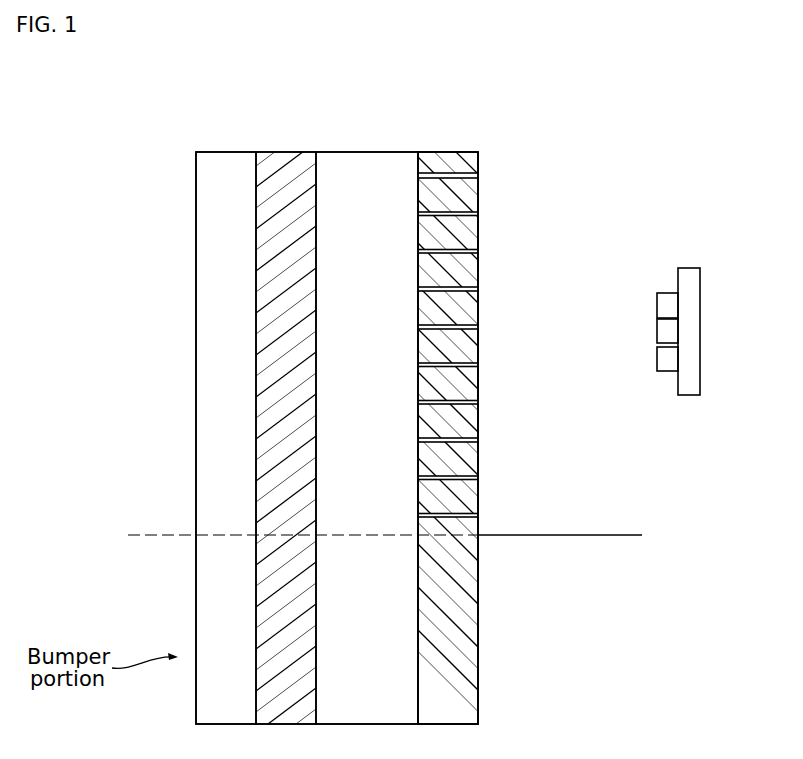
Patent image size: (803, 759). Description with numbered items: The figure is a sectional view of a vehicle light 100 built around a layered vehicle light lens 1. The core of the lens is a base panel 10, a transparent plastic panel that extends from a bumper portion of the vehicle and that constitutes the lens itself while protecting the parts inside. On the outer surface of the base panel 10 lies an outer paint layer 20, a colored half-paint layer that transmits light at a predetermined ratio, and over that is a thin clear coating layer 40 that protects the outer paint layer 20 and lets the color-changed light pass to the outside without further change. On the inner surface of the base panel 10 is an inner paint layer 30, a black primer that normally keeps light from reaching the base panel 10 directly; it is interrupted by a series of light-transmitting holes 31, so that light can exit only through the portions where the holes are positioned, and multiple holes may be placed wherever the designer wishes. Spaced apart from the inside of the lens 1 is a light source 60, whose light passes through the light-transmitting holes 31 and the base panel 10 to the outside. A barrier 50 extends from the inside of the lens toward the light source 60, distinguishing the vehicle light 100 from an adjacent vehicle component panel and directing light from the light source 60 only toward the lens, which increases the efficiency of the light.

The vehicle light lens 1 is at (178, 305).
The base panel 10 is at (372, 160).
The outer paint layer 20 is at (288, 160).
The inner paint layer 30 is at (495, 406).
The light-transmitting hole 31 is at (479, 250).
The clear coating layer 40 is at (226, 160).
The barrier 50 is at (582, 536).
The light source 60 is at (691, 334).
The vehicle light 100 is at (392, 421).